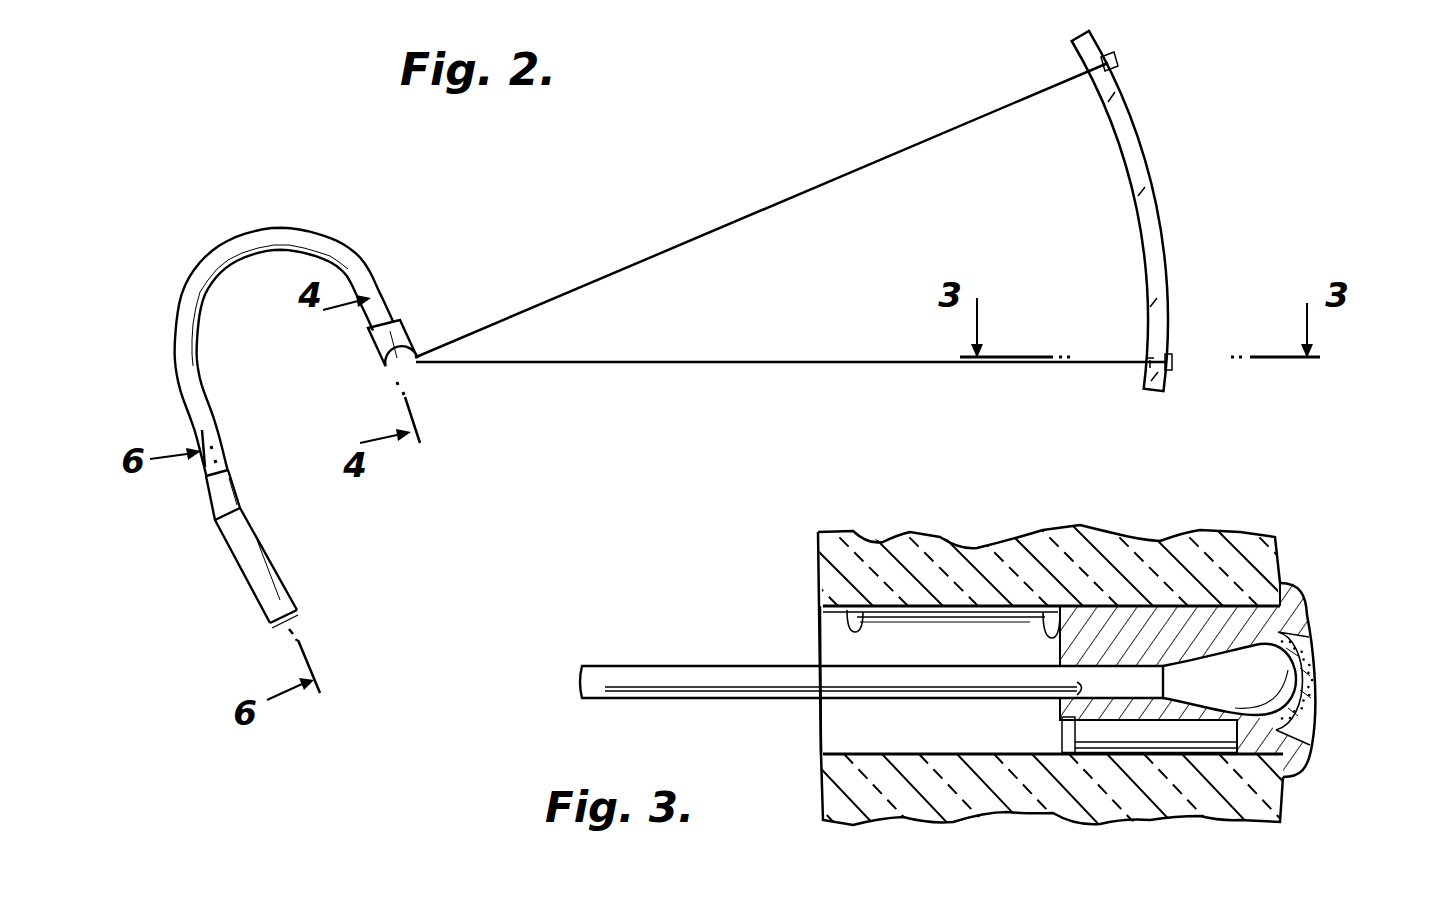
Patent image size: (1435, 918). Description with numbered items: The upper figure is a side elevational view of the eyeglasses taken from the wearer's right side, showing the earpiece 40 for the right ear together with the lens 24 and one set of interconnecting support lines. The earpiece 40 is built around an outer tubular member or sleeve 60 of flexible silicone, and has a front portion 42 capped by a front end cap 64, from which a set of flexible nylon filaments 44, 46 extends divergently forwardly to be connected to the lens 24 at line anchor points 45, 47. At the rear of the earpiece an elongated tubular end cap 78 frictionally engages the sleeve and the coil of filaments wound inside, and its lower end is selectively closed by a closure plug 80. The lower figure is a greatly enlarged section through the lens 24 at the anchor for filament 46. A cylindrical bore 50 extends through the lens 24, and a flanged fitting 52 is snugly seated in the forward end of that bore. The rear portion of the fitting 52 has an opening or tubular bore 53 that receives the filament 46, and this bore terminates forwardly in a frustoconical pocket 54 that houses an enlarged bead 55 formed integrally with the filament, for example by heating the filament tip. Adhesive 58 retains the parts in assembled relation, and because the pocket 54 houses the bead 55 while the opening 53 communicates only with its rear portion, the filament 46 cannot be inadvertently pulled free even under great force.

In FIG. 2, the earpiece 40 is at (210, 230).
In FIG. 2, the outer tubular member or sleeve 60 is at (289, 237).
In FIG. 2, the front portion 42 is at (367, 278).
In FIG. 2, the front end cap 64 is at (403, 336).
In FIG. 2, the flexible filament 44 is at (769, 205).
In FIG. 2, the flexible filament 46 is at (745, 364).
In FIG. 3, the flexible filament 46 is at (690, 683).
In FIG. 2, the lens 24 is at (1137, 155).
In FIG. 3, the lens 24 is at (1117, 787).
In FIG. 2, the line anchor point 45 is at (1115, 62).
In FIG. 2, the line anchor point 47 is at (1175, 363).
In FIG. 2, the elongated tubular end cap 78 is at (255, 568).
In FIG. 2, the closure plug 80 is at (297, 619).
In FIG. 3, the cylindrical bore 50 is at (830, 626).
In FIG. 3, the flanged fitting 52 is at (1048, 606).
In FIG. 3, the opening or tubular bore 53 is at (1078, 690).
In FIG. 3, the frustoconical pocket 54 is at (1243, 640).
In FIG. 3, the enlarged bead 55 is at (1265, 660).
In FIG. 3, the adhesive 58 is at (1305, 713).